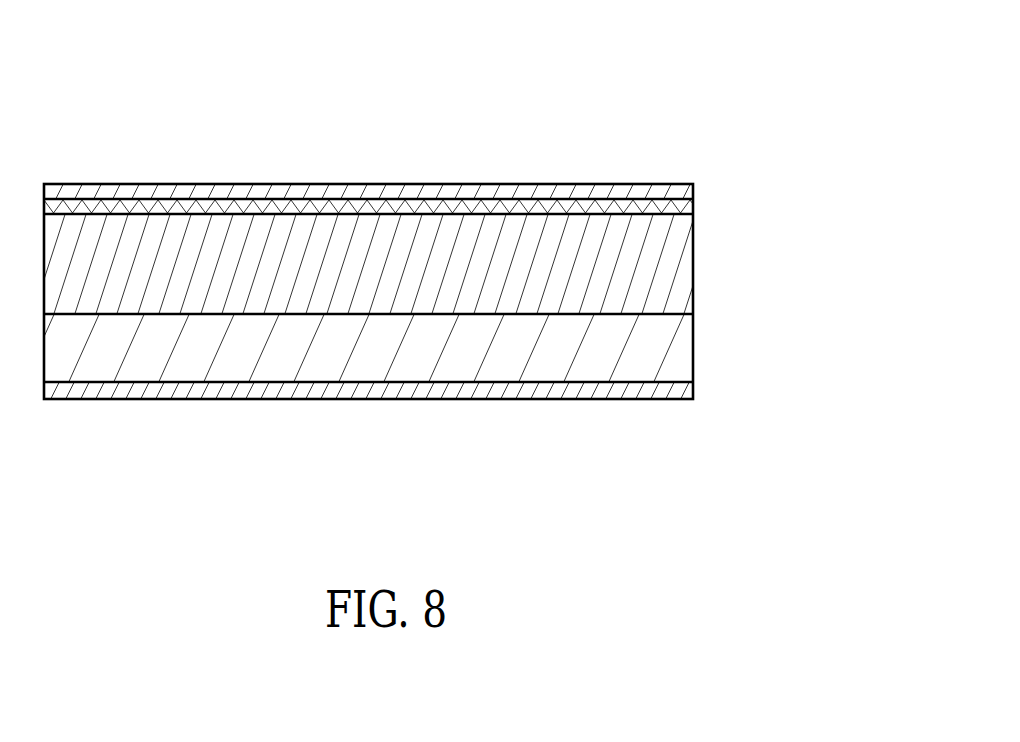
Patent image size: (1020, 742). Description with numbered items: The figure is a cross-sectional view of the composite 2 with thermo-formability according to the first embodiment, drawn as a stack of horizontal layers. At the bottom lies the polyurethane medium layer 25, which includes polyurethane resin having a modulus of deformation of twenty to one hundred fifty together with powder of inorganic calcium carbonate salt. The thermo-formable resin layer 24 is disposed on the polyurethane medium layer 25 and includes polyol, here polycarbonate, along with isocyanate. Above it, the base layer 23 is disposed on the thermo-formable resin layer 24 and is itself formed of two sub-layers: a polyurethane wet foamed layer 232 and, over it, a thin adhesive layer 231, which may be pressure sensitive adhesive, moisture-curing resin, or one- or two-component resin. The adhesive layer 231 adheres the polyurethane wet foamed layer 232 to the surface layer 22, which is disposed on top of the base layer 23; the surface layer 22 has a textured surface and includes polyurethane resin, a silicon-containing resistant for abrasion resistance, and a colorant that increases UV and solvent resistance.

The composite 2 is at (713, 138).
The surface layer 22 is at (685, 192).
The base layer 23 is at (455, 257).
The adhesive layer 231 is at (685, 207).
The polyurethane wet foamed layer 232 is at (685, 267).
The thermo-formable resin layer 24 is at (685, 343).
The polyurethane medium layer 25 is at (685, 388).